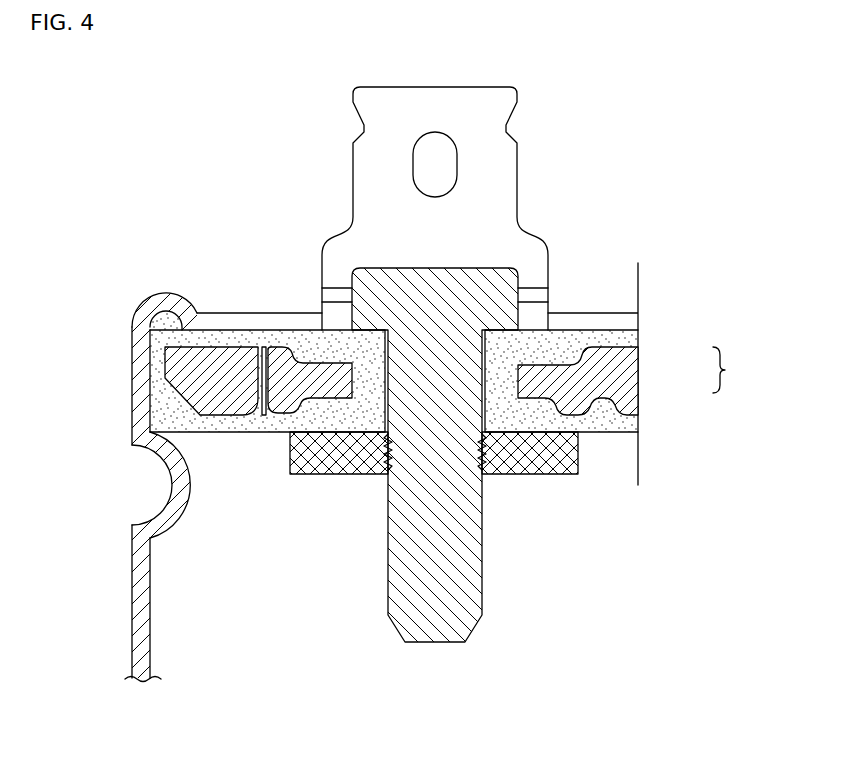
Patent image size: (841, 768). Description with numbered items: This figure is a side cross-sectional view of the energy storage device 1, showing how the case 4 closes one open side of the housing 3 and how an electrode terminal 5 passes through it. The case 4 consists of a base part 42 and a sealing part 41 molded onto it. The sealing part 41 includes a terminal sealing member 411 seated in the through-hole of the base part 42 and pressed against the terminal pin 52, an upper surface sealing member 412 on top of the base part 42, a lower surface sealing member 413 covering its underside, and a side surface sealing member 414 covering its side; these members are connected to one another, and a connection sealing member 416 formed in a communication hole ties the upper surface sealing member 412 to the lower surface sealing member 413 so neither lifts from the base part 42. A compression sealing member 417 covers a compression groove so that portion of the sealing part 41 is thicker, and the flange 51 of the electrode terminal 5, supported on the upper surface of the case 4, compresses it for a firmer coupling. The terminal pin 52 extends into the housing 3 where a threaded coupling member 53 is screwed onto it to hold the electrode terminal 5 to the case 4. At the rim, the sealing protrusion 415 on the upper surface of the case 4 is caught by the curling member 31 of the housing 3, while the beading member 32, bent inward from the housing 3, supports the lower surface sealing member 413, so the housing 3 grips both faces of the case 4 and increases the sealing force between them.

The energy storage device 1 is at (54, 95).
The housing 3 is at (134, 600).
The curling member 31 is at (165, 302).
The beading member 32 is at (163, 508).
The case 4 is at (612, 427).
The sealing part 41 is at (639, 337).
The base part 42 is at (631, 381).
The terminal sealing member 411 is at (513, 415).
The upper surface sealing member 412 is at (211, 338).
The lower surface sealing member 413 is at (222, 432).
The side surface sealing member 414 is at (156, 370).
The sealing protrusion 415 is at (150, 330).
The connection sealing member 416 is at (263, 348).
The compression sealing member 417 is at (308, 342).
The electrode terminal 5 is at (528, 203).
The flange 51 is at (550, 306).
The terminal pin 52 is at (460, 572).
The coupling member 53 is at (332, 460).